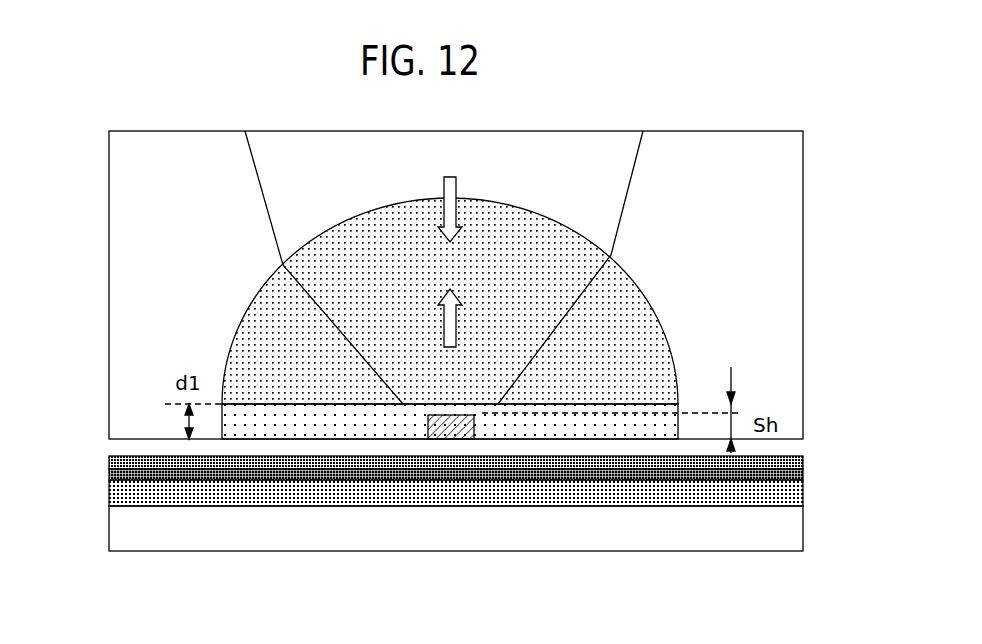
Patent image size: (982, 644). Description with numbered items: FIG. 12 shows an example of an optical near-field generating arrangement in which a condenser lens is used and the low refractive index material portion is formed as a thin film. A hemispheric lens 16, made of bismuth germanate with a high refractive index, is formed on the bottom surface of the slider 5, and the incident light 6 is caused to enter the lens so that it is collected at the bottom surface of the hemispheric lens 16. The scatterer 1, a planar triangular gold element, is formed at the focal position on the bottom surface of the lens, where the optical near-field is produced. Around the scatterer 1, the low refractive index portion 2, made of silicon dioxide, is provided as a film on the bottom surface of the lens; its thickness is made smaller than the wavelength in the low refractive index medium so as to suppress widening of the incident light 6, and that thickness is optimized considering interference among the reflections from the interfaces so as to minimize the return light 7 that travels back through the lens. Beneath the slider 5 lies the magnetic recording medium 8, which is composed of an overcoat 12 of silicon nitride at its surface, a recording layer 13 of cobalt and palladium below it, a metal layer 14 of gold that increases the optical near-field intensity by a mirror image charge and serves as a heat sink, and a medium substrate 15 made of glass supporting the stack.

The scatterer 1 is at (467, 433).
The low refractive index portion 2 is at (608, 428).
The slider 5 is at (156, 202).
The incident light 6 is at (440, 165).
The reflected light 7 is at (437, 320).
The magnetic recording medium 8 is at (418, 545).
The overcoat 12 is at (550, 460).
The recording layer 13 is at (398, 473).
The metal layer 14 is at (312, 493).
The medium substrate 15 is at (243, 518).
The hemispheric lens 16 is at (613, 308).